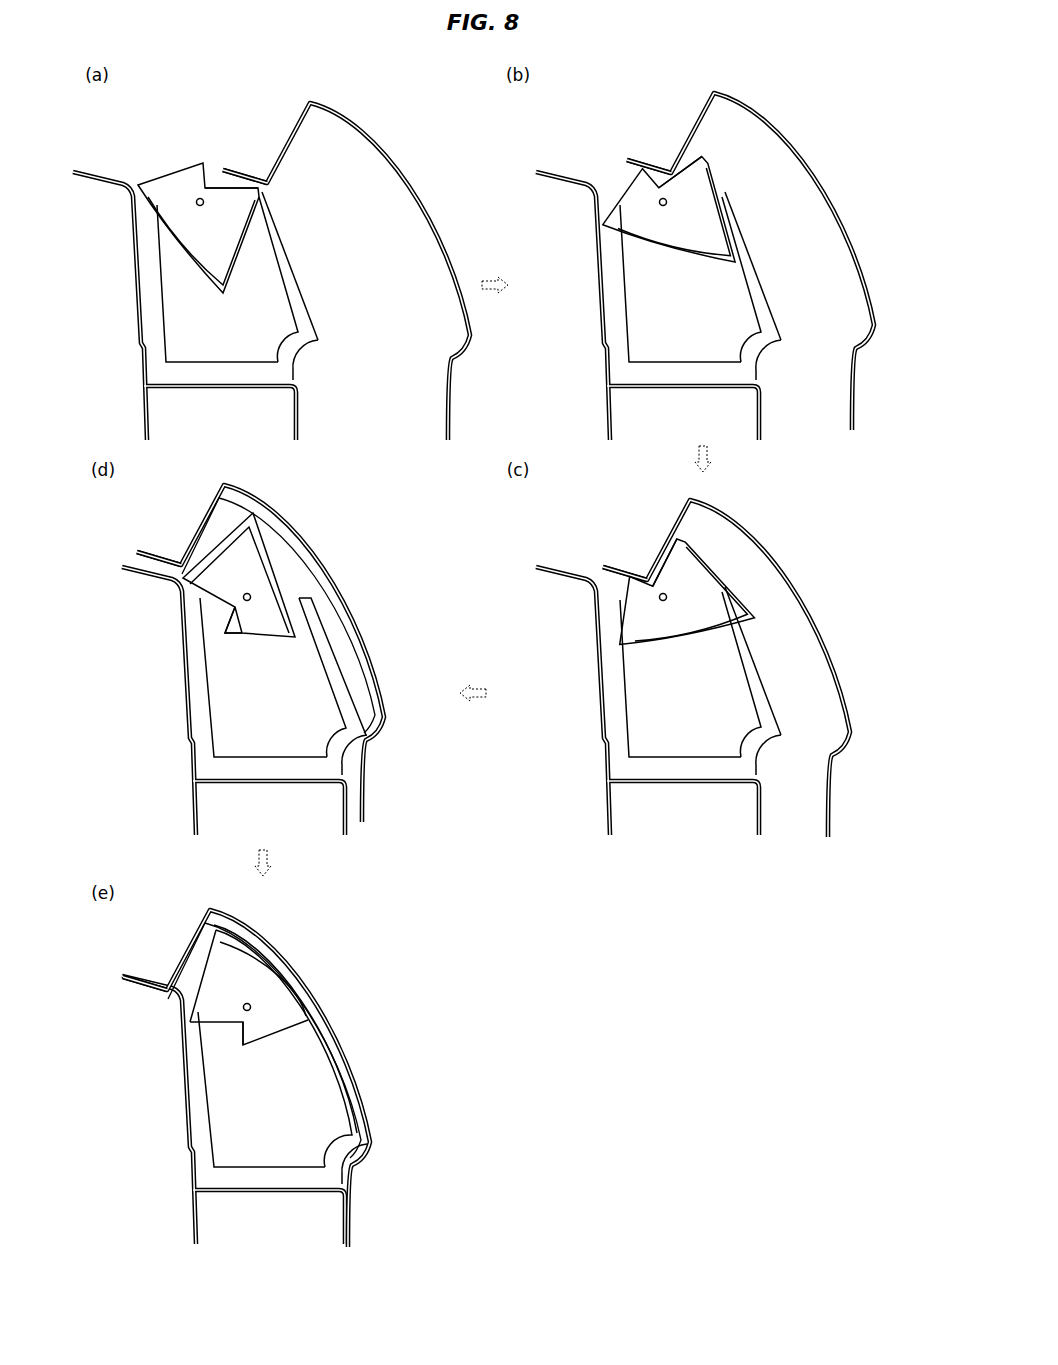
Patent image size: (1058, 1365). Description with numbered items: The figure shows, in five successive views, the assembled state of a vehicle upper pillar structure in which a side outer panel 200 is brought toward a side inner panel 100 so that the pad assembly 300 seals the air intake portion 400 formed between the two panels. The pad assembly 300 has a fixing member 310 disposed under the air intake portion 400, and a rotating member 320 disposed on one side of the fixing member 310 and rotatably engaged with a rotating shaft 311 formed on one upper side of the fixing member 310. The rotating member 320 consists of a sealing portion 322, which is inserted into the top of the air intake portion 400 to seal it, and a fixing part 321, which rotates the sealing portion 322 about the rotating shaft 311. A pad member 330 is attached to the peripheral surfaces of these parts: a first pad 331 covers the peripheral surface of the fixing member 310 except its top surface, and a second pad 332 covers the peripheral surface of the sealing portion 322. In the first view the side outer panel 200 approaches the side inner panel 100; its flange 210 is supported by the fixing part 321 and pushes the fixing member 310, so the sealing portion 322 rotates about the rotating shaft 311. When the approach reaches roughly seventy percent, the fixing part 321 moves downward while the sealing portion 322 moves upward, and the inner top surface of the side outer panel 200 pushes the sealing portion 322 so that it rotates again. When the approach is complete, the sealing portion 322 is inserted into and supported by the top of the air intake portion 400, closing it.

The side inner panel 100 is at (133, 250).
The side outer panel 200 is at (386, 158).
The flange 210 is at (266, 190).
The pad assembly 300 is at (312, 361).
The fixing member 310 is at (168, 298).
The rotating shaft 311 is at (245, 188).
The rotating member 320 is at (140, 103).
The fixing part 321 is at (204, 199).
The sealing portion 322 is at (222, 265).
The pad member 330 is at (378, 245).
The first pad 331 is at (302, 315).
The second pad 332 is at (250, 262).
The air intake portion 400 is at (318, 578).